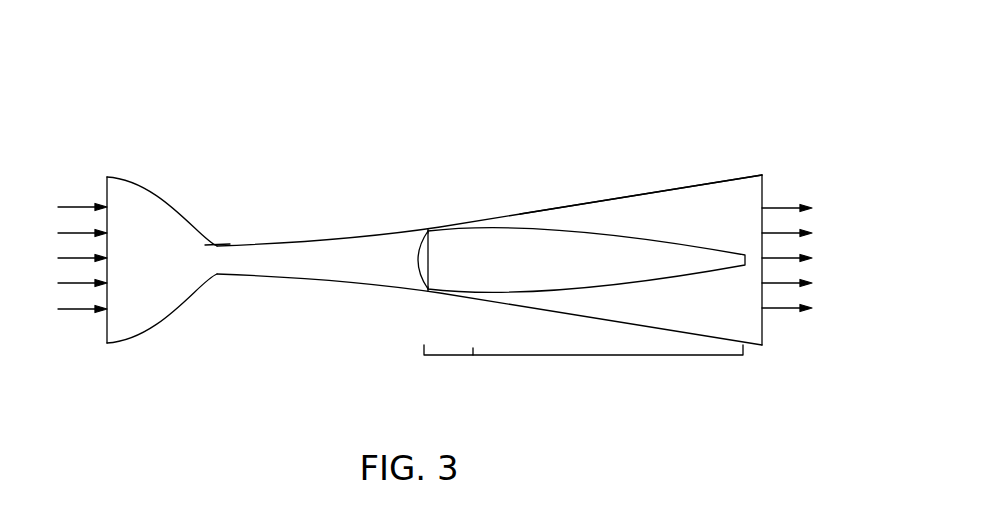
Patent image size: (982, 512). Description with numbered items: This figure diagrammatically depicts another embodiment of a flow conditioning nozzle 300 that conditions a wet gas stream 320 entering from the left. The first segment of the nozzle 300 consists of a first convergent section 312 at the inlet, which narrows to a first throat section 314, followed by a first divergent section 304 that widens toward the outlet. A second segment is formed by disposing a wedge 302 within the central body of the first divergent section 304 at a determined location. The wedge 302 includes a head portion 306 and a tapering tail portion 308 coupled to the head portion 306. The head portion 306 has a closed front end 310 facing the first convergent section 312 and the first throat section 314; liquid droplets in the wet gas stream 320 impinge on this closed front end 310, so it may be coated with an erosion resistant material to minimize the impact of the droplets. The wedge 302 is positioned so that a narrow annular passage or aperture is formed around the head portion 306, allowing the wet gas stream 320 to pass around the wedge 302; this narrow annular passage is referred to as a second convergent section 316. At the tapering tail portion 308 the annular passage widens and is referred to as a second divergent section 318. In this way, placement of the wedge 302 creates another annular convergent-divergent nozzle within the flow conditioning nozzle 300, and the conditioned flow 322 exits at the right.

The flow conditioning nozzle 300 is at (435, 206).
The wedge 302 is at (532, 245).
The first divergent section 304 is at (330, 237).
The head portion 306 is at (449, 355).
The tapering tail portion 308 is at (608, 355).
The closed front end 310 is at (418, 262).
The first convergent section 312 is at (134, 180).
The first throat section 314 is at (220, 257).
The second convergent section 316 is at (427, 228).
The second divergent section 318 is at (585, 213).
The wet gas stream 320 is at (68, 204).
The outlet flow 322 is at (772, 205).